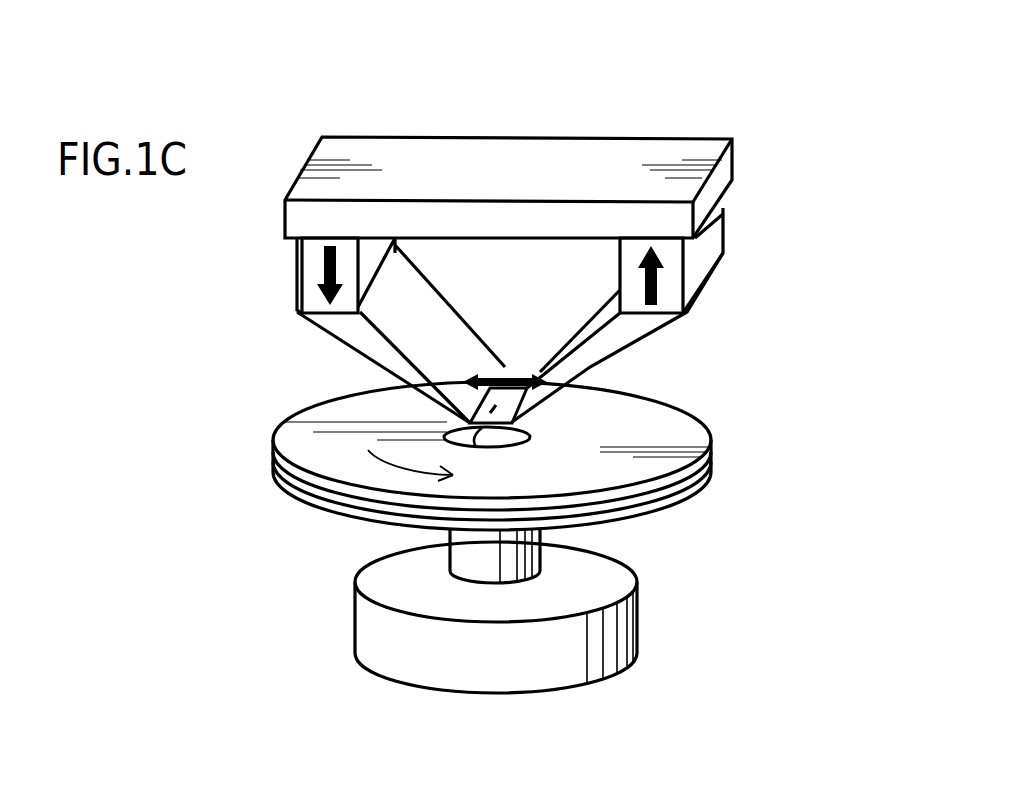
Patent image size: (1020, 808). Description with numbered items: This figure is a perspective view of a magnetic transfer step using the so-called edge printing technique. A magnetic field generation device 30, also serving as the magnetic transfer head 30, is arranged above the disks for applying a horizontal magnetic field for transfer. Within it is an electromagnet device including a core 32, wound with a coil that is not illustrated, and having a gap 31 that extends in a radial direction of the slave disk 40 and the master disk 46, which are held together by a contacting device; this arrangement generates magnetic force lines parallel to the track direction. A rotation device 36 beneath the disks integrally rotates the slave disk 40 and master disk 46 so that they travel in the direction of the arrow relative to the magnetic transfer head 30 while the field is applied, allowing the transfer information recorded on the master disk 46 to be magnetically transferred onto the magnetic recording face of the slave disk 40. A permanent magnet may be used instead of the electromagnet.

The magnetic field generation device 30 is at (663, 97).
The gap 31 is at (512, 448).
The core 32 is at (637, 353).
The rotation device 36 is at (640, 630).
The slave disk 40 is at (690, 413).
The master disk 46 is at (712, 470).